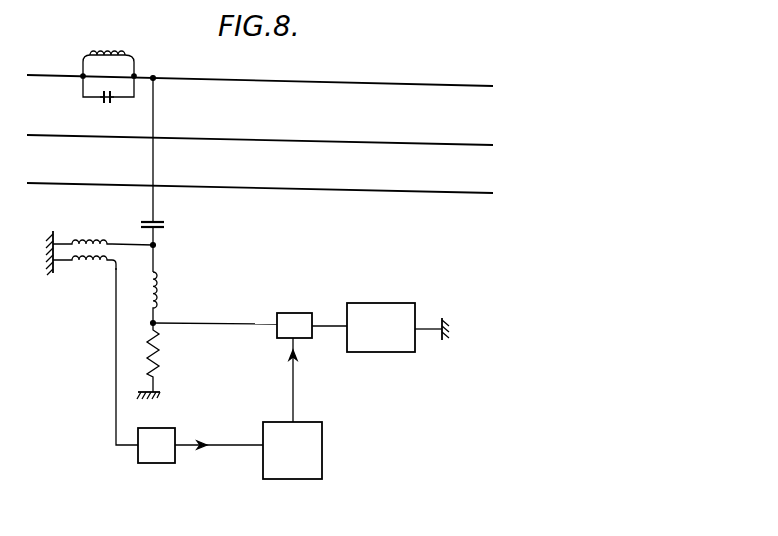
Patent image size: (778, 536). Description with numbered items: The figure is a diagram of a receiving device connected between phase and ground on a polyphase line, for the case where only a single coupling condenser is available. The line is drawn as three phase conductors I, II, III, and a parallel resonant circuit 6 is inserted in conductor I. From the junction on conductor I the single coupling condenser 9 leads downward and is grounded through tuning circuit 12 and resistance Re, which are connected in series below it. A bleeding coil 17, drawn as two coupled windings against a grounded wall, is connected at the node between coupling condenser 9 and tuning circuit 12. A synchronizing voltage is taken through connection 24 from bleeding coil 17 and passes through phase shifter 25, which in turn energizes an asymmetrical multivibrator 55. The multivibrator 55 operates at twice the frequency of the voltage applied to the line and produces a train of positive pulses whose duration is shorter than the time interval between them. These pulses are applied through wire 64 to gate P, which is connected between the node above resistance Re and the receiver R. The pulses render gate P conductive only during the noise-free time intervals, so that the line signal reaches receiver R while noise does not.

The phase conductor of the polyphase line I is at (158, 75).
The phase conductor of the polyphase line II is at (190, 140).
The phase conductor of the polyphase line III is at (157, 186).
The parallel resonant circuit 6 is at (85, 75).
The coupling condenser 9 is at (166, 226).
The tuning circuit 12 is at (157, 290).
The bleeding coil 17 is at (85, 238).
The synchronizing voltage connection 24 is at (115, 334).
The phase shifter 25 is at (159, 464).
The asymmetrical multivibrator 55 is at (310, 470).
The wire 64 is at (297, 385).
The resistance Re is at (160, 361).
The gate P is at (280, 318).
The receiver R is at (398, 299).